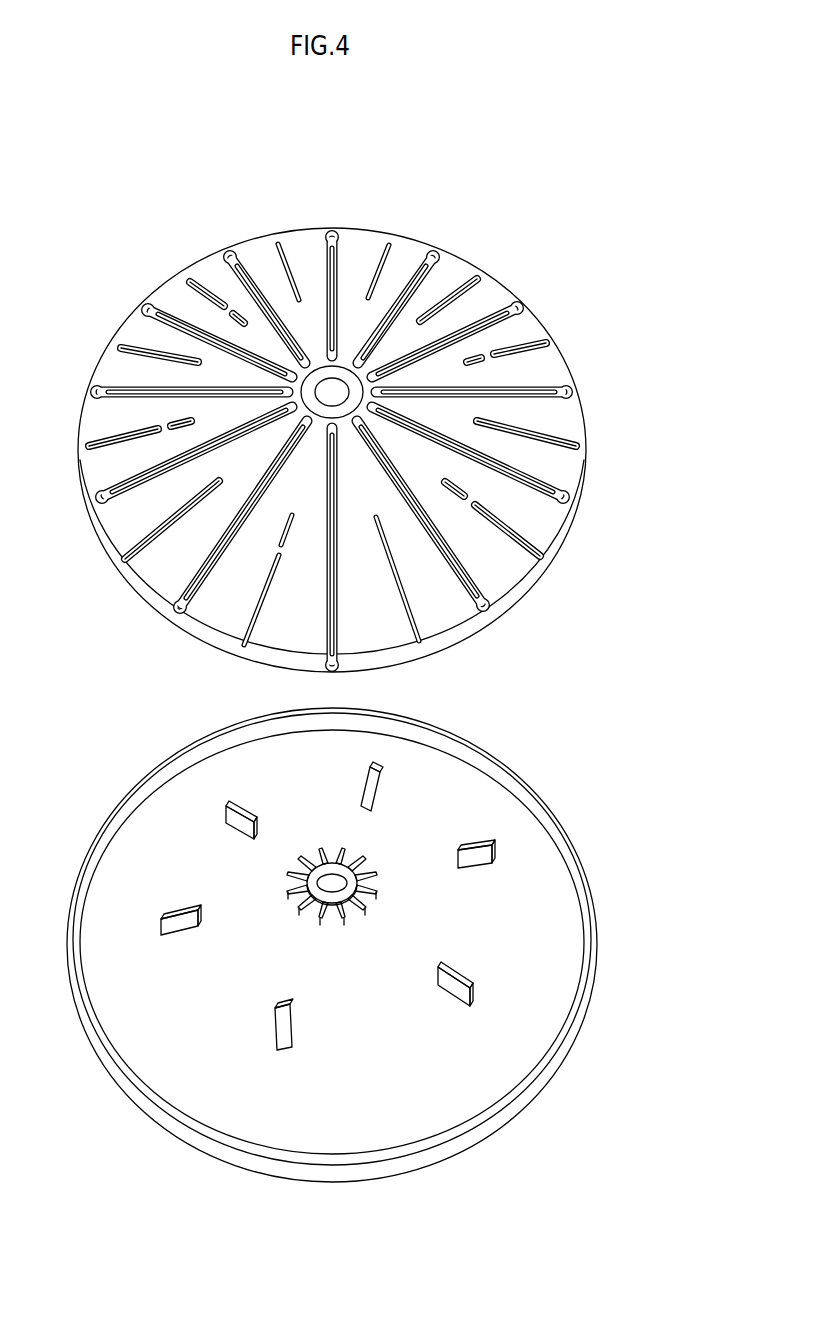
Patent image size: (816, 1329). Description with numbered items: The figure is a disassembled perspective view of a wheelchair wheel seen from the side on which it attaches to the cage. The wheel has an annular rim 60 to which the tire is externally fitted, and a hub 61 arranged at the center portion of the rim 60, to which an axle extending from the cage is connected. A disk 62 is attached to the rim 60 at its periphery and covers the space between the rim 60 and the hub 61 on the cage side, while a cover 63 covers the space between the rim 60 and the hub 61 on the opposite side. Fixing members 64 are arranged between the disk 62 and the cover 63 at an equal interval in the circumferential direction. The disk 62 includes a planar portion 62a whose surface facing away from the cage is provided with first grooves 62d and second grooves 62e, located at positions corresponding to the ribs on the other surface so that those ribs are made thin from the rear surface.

The rim 60 is at (374, 945).
The hub 61 is at (352, 908).
The disk 62 is at (374, 424).
The planar portion 62a is at (542, 527).
The first grooves 62d is at (550, 490).
The second grooves 62e is at (543, 553).
The cover 63 is at (490, 1065).
The fixing members 64 is at (275, 1033).